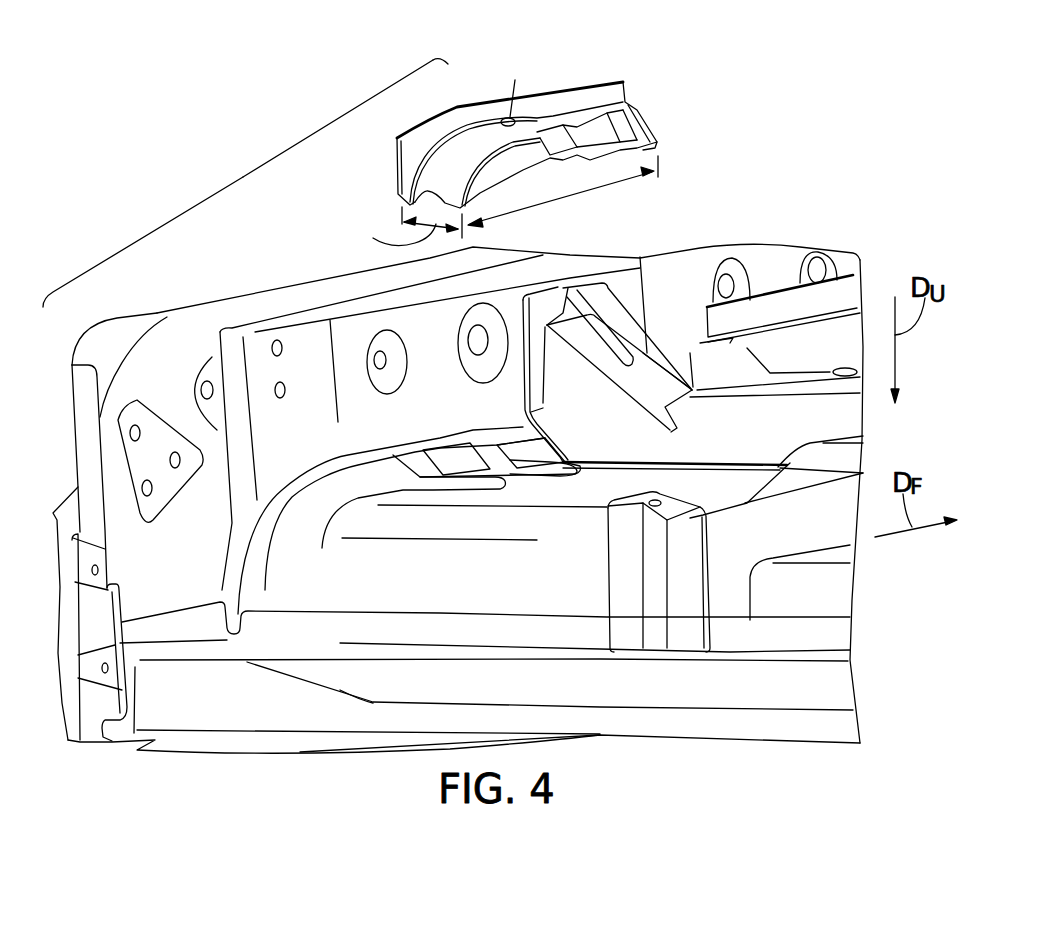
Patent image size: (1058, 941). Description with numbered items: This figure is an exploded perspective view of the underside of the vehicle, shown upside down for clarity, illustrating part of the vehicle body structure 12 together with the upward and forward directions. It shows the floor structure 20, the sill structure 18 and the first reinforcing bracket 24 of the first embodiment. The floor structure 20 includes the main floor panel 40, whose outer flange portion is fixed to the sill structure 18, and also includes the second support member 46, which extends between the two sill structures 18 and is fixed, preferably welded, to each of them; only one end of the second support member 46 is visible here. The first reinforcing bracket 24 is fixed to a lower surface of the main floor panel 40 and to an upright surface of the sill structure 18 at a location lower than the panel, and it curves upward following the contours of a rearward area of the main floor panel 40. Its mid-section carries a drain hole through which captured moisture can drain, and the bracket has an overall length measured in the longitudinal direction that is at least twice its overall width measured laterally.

The vehicle body structure 12 is at (243, 177).
The sill structure 18 is at (517, 228).
The floor structure 20 is at (851, 598).
The first reinforcing bracket 24 is at (563, 88).
The main floor panel 40 is at (495, 570).
The second support member 46 is at (642, 432).